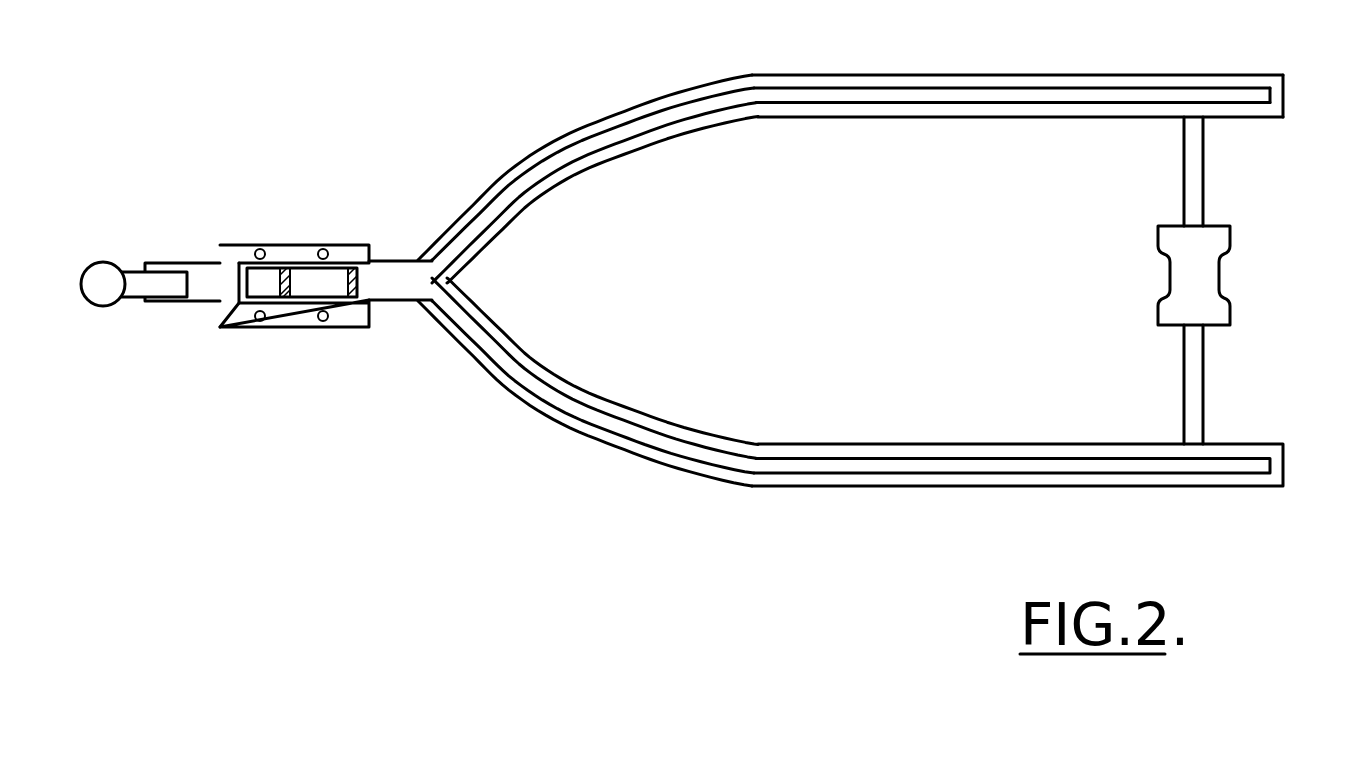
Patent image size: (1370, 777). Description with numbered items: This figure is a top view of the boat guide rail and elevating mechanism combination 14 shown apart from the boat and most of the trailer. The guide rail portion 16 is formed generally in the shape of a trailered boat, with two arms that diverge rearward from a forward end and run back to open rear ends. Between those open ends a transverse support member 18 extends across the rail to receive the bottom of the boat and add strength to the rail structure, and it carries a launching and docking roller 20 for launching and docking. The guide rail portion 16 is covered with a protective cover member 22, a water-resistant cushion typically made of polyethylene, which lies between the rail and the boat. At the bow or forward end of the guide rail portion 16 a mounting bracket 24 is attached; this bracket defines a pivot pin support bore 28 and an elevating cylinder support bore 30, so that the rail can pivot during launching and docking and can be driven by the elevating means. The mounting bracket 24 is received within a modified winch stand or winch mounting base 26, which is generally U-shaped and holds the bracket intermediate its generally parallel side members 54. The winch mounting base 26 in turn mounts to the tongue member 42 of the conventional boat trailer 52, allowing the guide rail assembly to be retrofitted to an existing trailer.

The guide rail and elevating mechanism combination 14 is at (525, 150).
The guide rail portion 16 is at (1222, 92).
The transverse support member 18 is at (1203, 178).
The launching and docking roller 20 is at (1218, 267).
The protective cover member 22 is at (1120, 75).
The mounting bracket 24 is at (325, 280).
The winch mounting base 26 is at (220, 327).
The pivot pin support bore 28 is at (283, 300).
The elevating cylinder support bore 30 is at (353, 268).
The tongue member 42 is at (157, 262).
The boat trailer 52 is at (172, 303).
The side members 54 is at (242, 263).